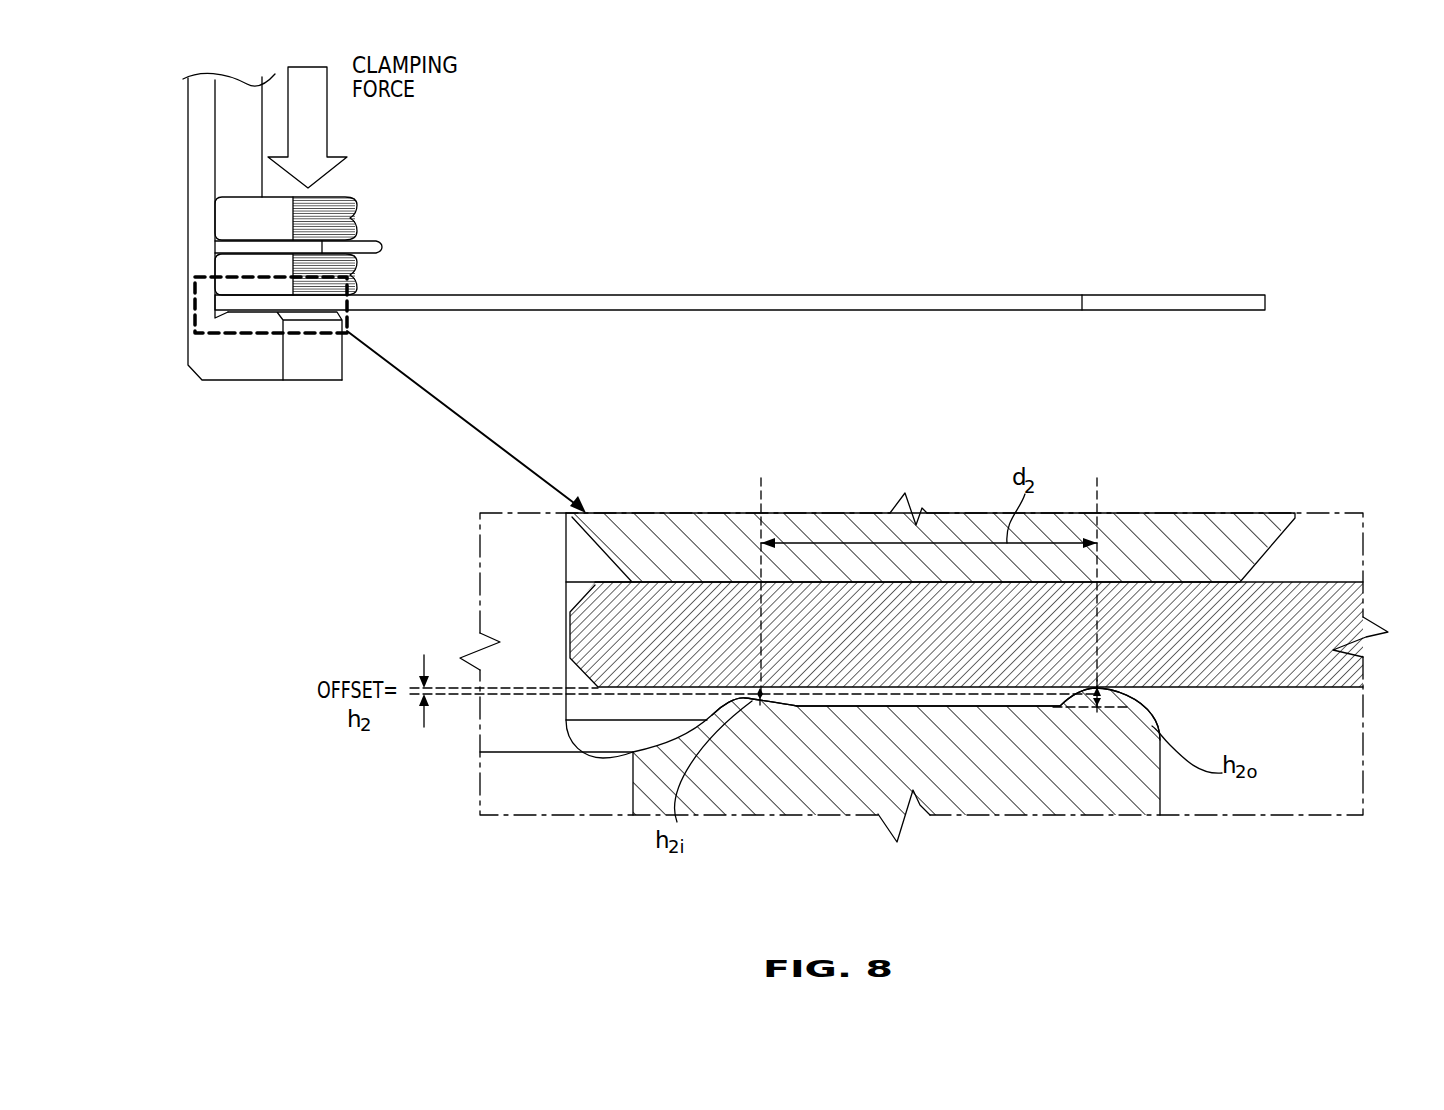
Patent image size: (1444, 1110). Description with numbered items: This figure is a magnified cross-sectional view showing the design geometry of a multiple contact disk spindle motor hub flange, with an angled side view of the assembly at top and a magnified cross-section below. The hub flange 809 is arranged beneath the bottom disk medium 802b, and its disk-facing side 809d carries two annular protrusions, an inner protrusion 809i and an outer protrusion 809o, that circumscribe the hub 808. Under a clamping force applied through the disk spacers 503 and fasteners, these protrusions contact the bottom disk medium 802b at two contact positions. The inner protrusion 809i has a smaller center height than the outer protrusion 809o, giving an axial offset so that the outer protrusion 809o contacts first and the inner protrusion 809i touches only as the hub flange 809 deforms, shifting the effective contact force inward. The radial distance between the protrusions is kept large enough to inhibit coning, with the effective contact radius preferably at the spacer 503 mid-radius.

The hub 808 is at (188, 244).
The disk spacer 503 is at (357, 218).
The bottom disk medium 802b is at (470, 293).
The hub flange 809 is at (262, 375).
The inner protrusion 809i is at (797, 706).
The disk-facing side 809d is at (997, 714).
The outer protrusion 809o is at (1090, 697).